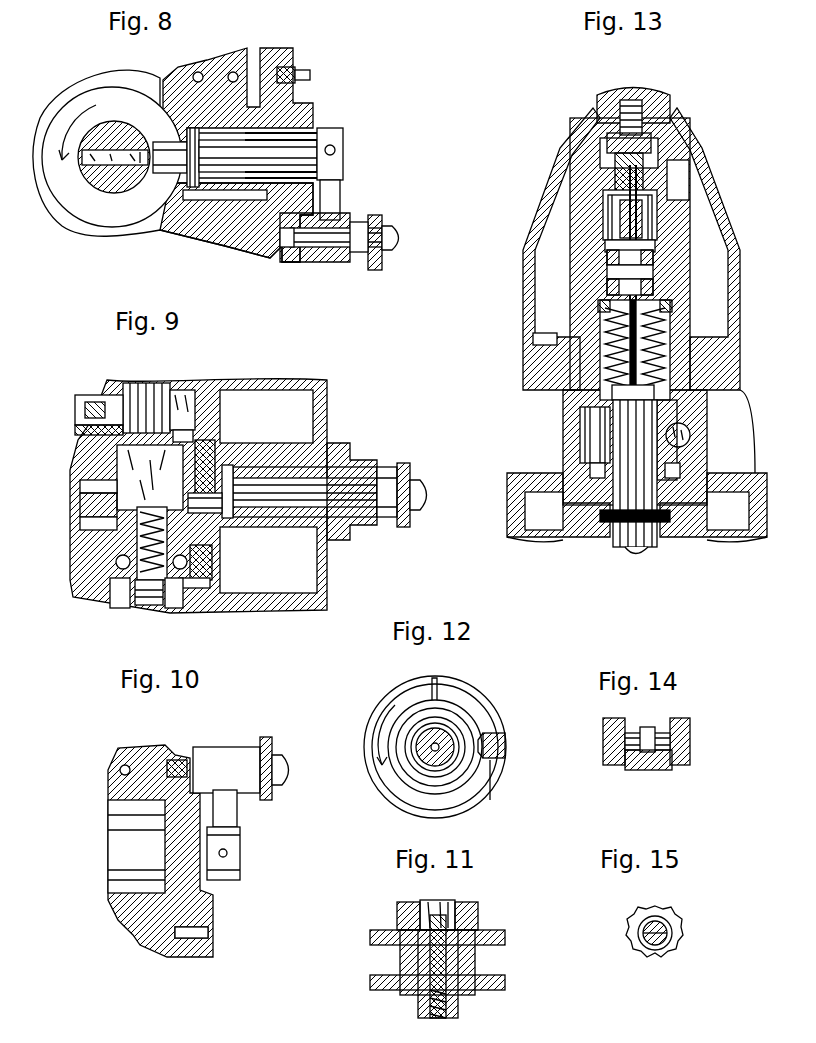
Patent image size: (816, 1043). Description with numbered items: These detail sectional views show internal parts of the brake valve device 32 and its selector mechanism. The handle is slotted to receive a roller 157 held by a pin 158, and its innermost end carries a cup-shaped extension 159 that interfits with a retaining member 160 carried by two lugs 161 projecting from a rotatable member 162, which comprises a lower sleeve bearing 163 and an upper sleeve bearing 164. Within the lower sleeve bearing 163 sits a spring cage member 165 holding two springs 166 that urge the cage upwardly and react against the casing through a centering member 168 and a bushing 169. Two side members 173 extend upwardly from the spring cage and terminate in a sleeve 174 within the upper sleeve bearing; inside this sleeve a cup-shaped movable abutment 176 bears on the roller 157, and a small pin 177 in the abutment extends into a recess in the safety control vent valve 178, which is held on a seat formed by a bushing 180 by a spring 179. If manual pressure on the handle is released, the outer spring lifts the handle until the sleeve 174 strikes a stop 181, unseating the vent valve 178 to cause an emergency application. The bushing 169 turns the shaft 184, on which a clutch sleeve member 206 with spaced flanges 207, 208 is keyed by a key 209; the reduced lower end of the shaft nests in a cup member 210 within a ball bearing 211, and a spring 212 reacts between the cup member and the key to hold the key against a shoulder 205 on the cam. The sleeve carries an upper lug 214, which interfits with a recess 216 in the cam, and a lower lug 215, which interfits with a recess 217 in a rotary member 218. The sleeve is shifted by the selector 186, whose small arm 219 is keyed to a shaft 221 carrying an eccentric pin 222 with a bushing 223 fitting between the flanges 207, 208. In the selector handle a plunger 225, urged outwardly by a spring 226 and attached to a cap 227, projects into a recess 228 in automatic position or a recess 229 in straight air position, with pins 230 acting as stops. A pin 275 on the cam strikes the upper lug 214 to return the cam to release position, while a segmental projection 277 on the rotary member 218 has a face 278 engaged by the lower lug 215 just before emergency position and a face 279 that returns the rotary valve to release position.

In FIG. 15, the brake valve device 32 is at (680, 922).
In FIG. 13, the roller 157 is at (655, 248).
In FIG. 13, the pin 158 is at (655, 268).
In FIG. 14, the cup-shaped extension 159 is at (650, 772).
In FIG. 14, the retaining member 160 is at (648, 730).
In FIG. 14, the lugs 161 is at (605, 722).
In FIG. 13, the rotatable member 162 is at (660, 288).
In FIG. 13, the lower sleeve bearing 163 is at (670, 395).
In FIG. 13, the upper sleeve bearing 164 is at (688, 182).
In FIG. 13, the spring cage member 165 is at (665, 318).
In FIG. 13, the springs 166 is at (600, 332).
In FIG. 13, the centering member 168 is at (685, 425).
In FIG. 13, the bushing 169 is at (600, 437).
In FIG. 13, the side members 173 is at (603, 255).
In FIG. 13, the sleeve 174 is at (615, 215).
In FIG. 13, the movable abutment 176 is at (605, 210).
In FIG. 13, the small pin 177 is at (600, 193).
In FIG. 13, the safety control vent valve 178 is at (655, 145).
In FIG. 15, the safety control vent valve 178 is at (652, 915).
In FIG. 13, the spring 179 is at (633, 97).
In FIG. 13, the bushing 180 is at (680, 162).
In FIG. 15, the bushing 180 is at (655, 958).
In FIG. 13, the stop 181 is at (597, 145).
In FIG. 8, the shaft 184 is at (125, 185).
In FIG. 9, the shaft 184 is at (147, 410).
In FIG. 13, the shaft 184 is at (633, 497).
In FIG. 11, the shaft 184 is at (445, 905).
In FIG. 8, the selector 186 is at (378, 237).
In FIG. 9, the selector 186 is at (403, 468).
In FIG. 10, the selector 186 is at (265, 740).
In FIG. 9, the shoulder 205 is at (100, 430).
In FIG. 11, the shoulder 205 is at (400, 920).
In FIG. 8, the clutch sleeve member 206 is at (90, 178).
In FIG. 9, the clutch sleeve member 206 is at (85, 505).
In FIG. 11, the clutch sleeve member 206 is at (480, 960).
In FIG. 9, the flange 207 is at (85, 485).
In FIG. 11, the flange 207 is at (505, 935).
In FIG. 8, the flange 208 is at (107, 226).
In FIG. 9, the flange 208 is at (88, 522).
In FIG. 11, the flange 208 is at (505, 983).
In FIG. 8, the key 209 is at (118, 135).
In FIG. 9, the key 209 is at (128, 470).
In FIG. 11, the key 209 is at (400, 958).
In FIG. 9, the cup member 210 is at (152, 600).
In FIG. 9, the ball bearing 211 is at (190, 600).
In FIG. 9, the spring 212 is at (130, 600).
In FIG. 9, the upper lug 214 is at (210, 445).
In FIG. 9, the lower lug 215 is at (205, 557).
In FIG. 12, the lower lug 215 is at (506, 745).
In FIG. 9, the recess 216 is at (195, 405).
In FIG. 9, the recess 217 is at (205, 582).
In FIG. 12, the recess 217 is at (485, 730).
In FIG. 9, the rotary member 218 is at (78, 573).
In FIG. 12, the rotary member 218 is at (378, 783).
In FIG. 8, the arm 219 is at (333, 193).
In FIG. 10, the arm 219 is at (228, 812).
In FIG. 8, the shaft 221 is at (283, 150).
In FIG. 8, the eccentric pin 222 is at (270, 236).
In FIG. 9, the eccentric pin 222 is at (207, 500).
In FIG. 8, the bushing 223 is at (160, 158).
In FIG. 9, the bushing 223 is at (200, 522).
In FIG. 8, the plunger 225 is at (322, 250).
In FIG. 8, the spring 226 is at (362, 265).
In FIG. 8, the cap 227 is at (404, 258).
In FIG. 8, the recess 228 is at (287, 70).
In FIG. 10, the recess 228 is at (168, 760).
In FIG. 8, the recess 229 is at (290, 252).
In FIG. 10, the recess 229 is at (183, 940).
In FIG. 8, the pins 230 is at (312, 73).
In FIG. 10, the pins 230 is at (205, 932).
In FIG. 9, the pin 275 is at (195, 428).
In FIG. 12, the segmental projection 277 is at (410, 698).
In FIG. 12, the face 278 is at (440, 690).
In FIG. 12, the face 279 is at (495, 780).